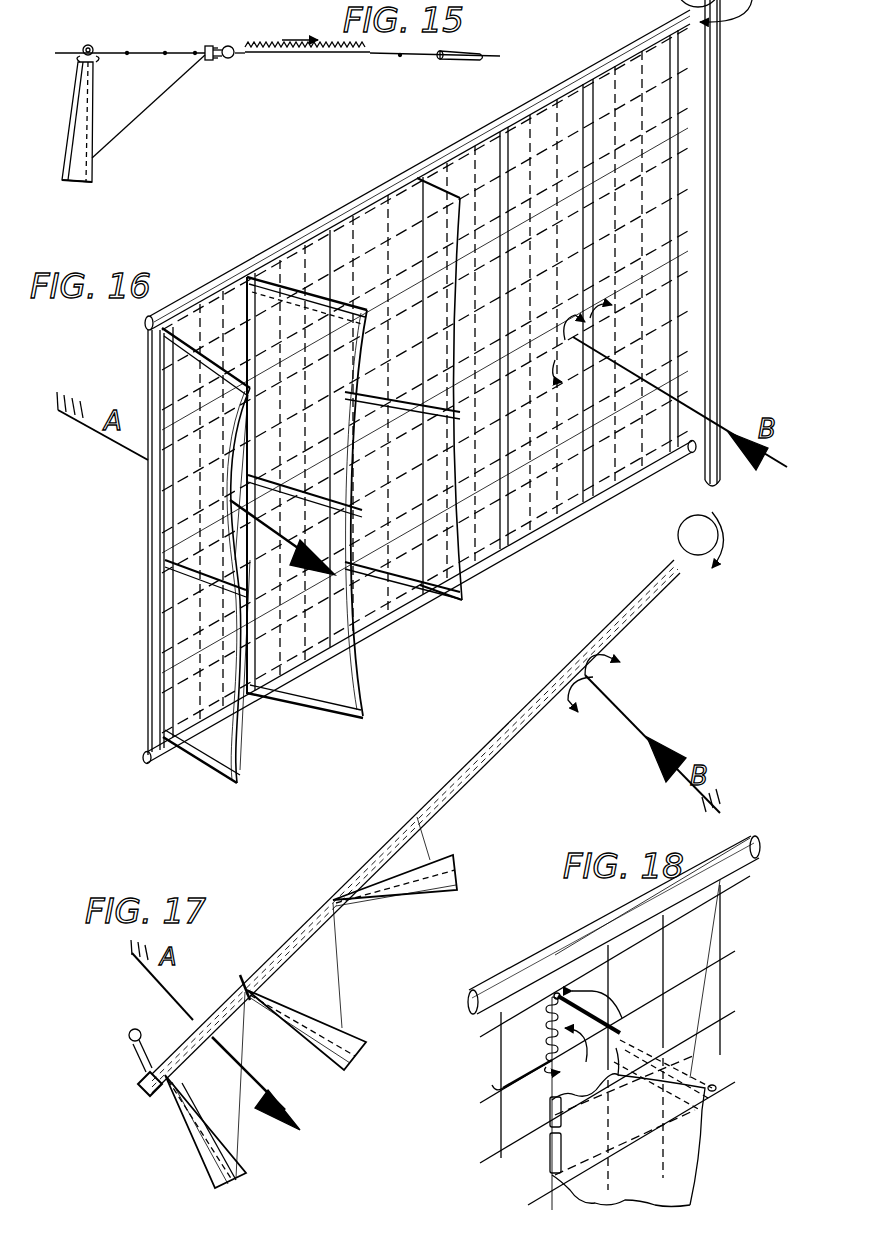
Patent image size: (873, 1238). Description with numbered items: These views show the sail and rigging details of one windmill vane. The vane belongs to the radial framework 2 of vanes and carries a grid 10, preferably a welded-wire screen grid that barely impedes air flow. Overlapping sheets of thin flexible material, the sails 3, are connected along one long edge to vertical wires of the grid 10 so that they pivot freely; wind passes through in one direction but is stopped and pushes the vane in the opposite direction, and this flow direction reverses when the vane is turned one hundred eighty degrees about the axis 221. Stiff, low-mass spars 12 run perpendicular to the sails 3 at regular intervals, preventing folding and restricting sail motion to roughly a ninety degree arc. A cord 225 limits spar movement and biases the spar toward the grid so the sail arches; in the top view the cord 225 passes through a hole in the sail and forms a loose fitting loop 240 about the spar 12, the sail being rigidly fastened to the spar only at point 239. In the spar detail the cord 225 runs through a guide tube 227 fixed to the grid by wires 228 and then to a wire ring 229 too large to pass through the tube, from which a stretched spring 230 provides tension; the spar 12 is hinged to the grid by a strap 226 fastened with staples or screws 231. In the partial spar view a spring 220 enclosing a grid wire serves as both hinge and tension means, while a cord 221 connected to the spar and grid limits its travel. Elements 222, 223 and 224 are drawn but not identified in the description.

In FIG. 15, the radial framework 2 is at (277, 55).
In FIG. 16, the radial framework 2 is at (325, 208).
In FIG. 17, the radial framework 2 is at (250, 968).
In FIG. 18, the radial framework 2 is at (508, 972).
In FIG. 15, the sail 3 is at (64, 145).
In FIG. 16, the sail 3 is at (356, 683).
In FIG. 17, the sail 3 is at (360, 1062).
In FIG. 18, the sail 3 is at (700, 1160).
In FIG. 15, the grid 10 is at (110, 46).
In FIG. 16, the grid 10 is at (246, 270).
In FIG. 17, the grid 10 is at (238, 992).
In FIG. 18, the grid 10 is at (500, 1138).
In FIG. 15, the spar 12 is at (94, 175).
In FIG. 16, the spar 12 is at (228, 780).
In FIG. 18, the spar 12 is at (718, 1082).
In FIG. 18, the spring 220 is at (575, 1103).
In FIG. 16, the axis 221 is at (722, 247).
In FIG. 18, the axis 221 is at (703, 1018).
In FIG. 18, the actuating bar 222 is at (599, 1009).
In FIG. 17, the end fitting of rod 223 is at (147, 1068).
In FIG. 17, the ball knob 224 is at (130, 1040).
In FIG. 15, the cord 225 is at (134, 125).
In FIG. 16, the cord 225 is at (243, 728).
In FIG. 17, the cord 225 is at (243, 1132).
In FIG. 15, the strap 226 is at (78, 60).
In FIG. 15, the guide tube 227 is at (212, 60).
In FIG. 15, the wires 228 is at (205, 46).
In FIG. 15, the wire ring 229 is at (230, 42).
In FIG. 15, the stretched spring 230 is at (303, 57).
In FIG. 15, the staples or screws 231 is at (96, 62).
In FIG. 17, the fastening point 239 is at (248, 1178).
In FIG. 17, the loose fitting loop 240 is at (228, 1158).